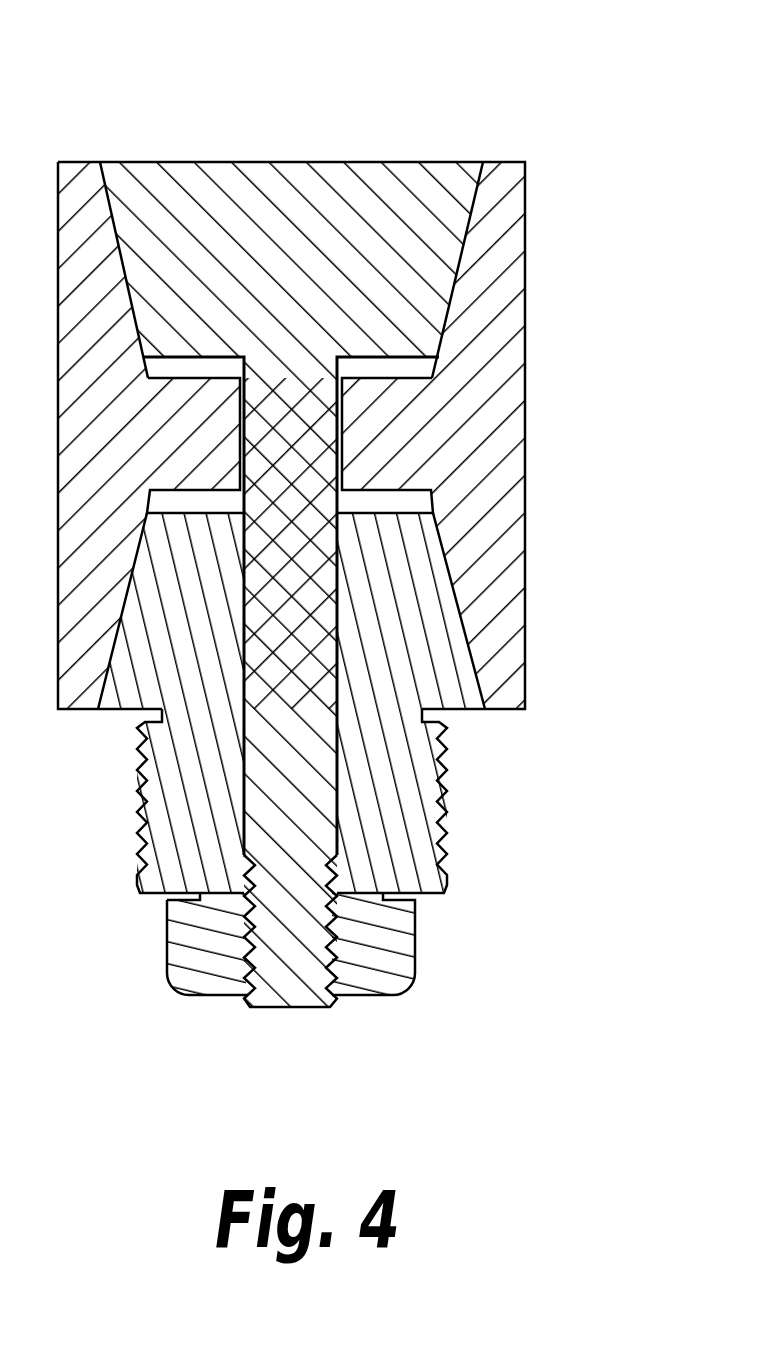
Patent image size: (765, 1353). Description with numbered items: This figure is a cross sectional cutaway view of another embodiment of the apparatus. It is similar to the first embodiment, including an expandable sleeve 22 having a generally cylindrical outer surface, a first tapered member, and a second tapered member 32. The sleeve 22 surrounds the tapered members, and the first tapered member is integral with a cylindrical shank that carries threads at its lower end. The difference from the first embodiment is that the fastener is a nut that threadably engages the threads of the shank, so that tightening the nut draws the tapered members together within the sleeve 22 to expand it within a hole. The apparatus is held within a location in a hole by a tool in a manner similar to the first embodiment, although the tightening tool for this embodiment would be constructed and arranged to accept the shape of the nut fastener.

The expandable sleeve 22 is at (478, 396).
The second tapered member 32 is at (418, 615).